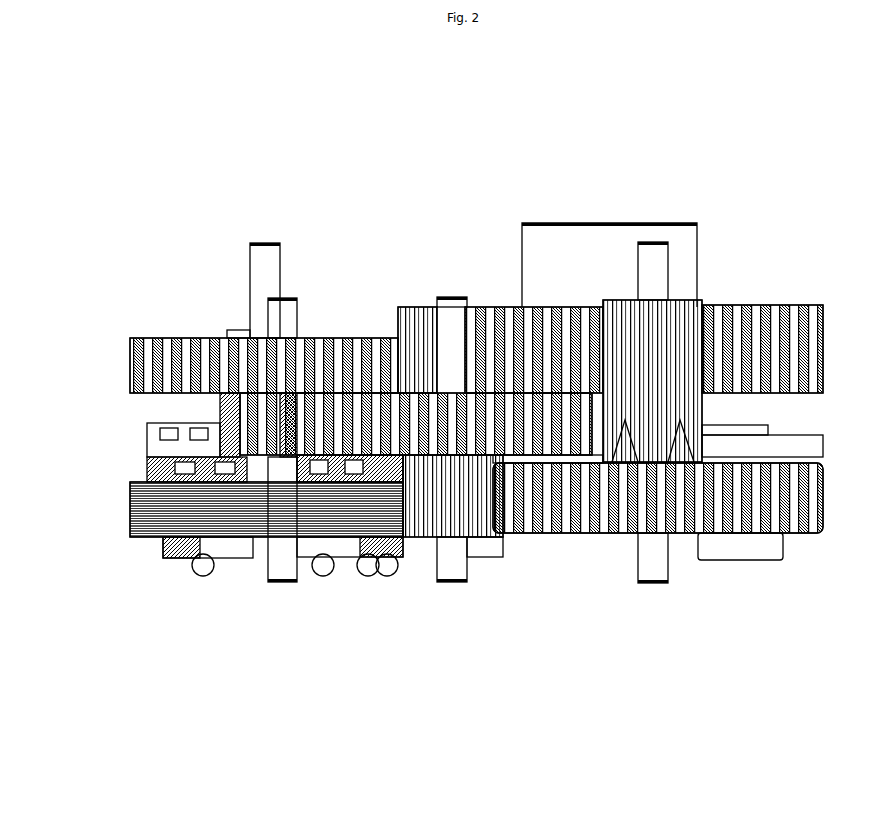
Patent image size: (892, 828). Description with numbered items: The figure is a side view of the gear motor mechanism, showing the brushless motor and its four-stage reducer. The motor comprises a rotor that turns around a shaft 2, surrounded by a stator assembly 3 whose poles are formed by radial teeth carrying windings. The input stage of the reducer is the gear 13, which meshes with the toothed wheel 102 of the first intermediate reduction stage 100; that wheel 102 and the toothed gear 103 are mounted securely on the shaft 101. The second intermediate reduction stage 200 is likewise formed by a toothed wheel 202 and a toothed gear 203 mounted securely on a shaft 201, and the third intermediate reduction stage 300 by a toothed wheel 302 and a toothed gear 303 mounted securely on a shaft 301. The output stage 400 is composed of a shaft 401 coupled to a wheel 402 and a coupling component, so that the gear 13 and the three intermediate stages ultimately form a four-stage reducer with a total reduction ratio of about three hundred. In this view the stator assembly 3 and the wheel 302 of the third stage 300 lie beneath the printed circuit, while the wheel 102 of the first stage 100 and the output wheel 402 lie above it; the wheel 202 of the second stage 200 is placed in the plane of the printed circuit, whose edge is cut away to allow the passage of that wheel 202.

The shaft 2 is at (194, 381).
The stator assembly 3 is at (126, 540).
The gear 13 is at (200, 293).
The first intermediate reduction stage 100 is at (283, 690).
The shaft 101 is at (266, 564).
The toothed wheel 102 is at (221, 334).
The toothed gear 103 is at (148, 437).
The second intermediate reduction stage 200 is at (460, 678).
The shaft 201 is at (424, 472).
The toothed wheel 202 is at (421, 367).
The toothed gear 203 is at (350, 532).
The third intermediate reduction stage 300 is at (652, 663).
The shaft 301 is at (608, 442).
The toothed wheel 302 is at (654, 523).
The toothed gear 303 is at (565, 349).
The output stage 400 is at (493, 219).
The shaft 401 is at (568, 218).
The wheel 402 is at (726, 314).